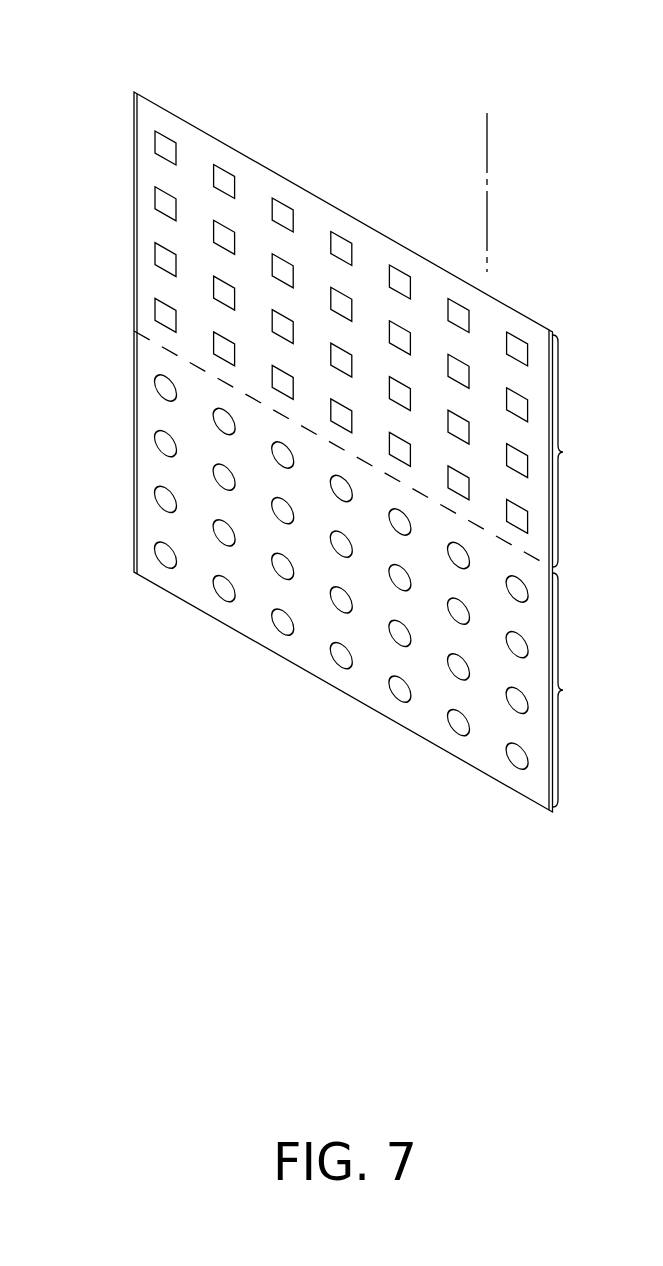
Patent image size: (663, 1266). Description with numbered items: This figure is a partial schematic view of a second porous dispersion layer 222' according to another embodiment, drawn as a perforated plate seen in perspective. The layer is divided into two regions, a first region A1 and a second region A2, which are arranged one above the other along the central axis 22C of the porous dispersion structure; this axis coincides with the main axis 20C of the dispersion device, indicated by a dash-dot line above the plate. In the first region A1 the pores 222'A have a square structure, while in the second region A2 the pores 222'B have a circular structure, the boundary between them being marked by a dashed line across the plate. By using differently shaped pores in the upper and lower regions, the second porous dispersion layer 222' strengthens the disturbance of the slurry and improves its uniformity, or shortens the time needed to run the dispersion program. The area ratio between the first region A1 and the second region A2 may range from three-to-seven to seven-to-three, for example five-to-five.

The second porous dispersion layer 222' is at (287, 410).
The pores in the first region 222'A is at (275, 330).
The pores in the second region 222'B is at (275, 570).
The main axis 20C is at (487, 175).
The central axis 22C is at (487, 175).
The first region A1 is at (576, 451).
The second region A2 is at (576, 690).